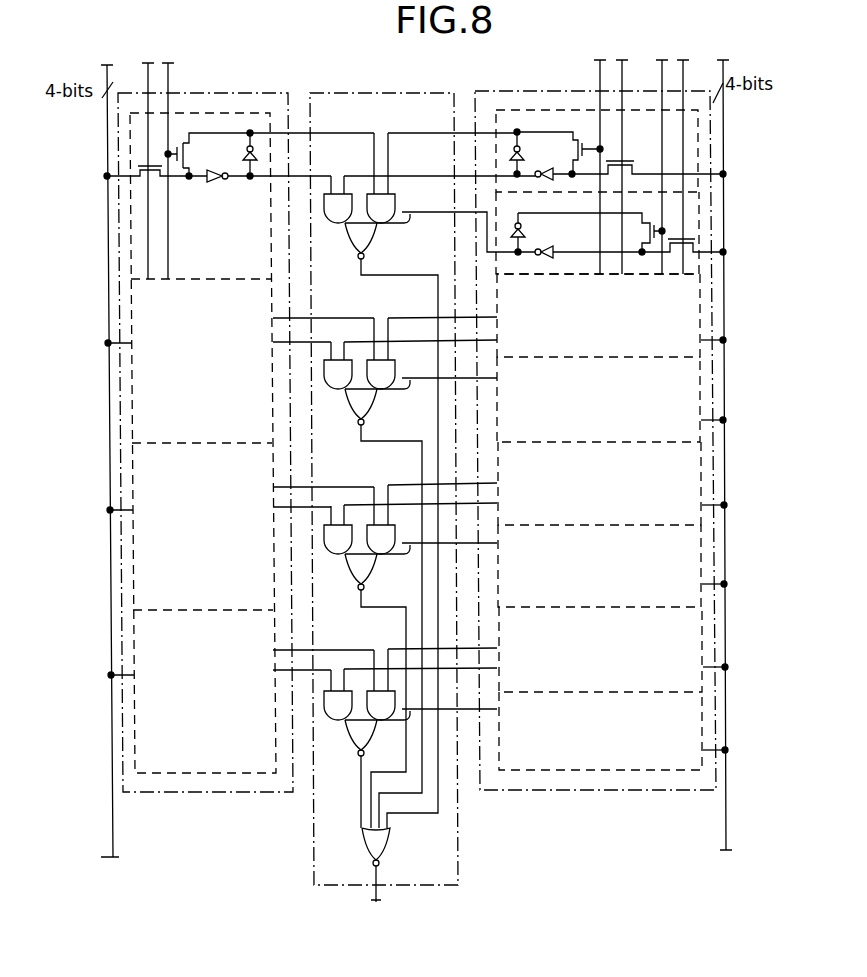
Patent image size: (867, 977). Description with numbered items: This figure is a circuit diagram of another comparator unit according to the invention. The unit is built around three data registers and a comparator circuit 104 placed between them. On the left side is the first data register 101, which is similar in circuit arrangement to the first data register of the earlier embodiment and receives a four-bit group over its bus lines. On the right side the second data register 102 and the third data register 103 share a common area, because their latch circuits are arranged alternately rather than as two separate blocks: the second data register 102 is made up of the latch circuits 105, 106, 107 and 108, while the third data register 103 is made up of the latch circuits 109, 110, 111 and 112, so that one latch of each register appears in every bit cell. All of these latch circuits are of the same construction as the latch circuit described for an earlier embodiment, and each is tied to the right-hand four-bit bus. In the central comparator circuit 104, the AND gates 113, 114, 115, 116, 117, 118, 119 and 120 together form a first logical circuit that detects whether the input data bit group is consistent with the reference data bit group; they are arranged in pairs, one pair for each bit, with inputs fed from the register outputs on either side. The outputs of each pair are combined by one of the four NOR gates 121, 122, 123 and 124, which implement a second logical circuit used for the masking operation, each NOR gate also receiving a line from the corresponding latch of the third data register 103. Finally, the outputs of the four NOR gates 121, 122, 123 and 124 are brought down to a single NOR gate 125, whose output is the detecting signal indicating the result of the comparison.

The first data register 101 is at (243, 93).
The second data register 102 is at (729, 152).
The third data register 103 is at (729, 243).
The comparator circuit 104 is at (397, 93).
The latch circuit 105 is at (552, 110).
The latch circuit 106 is at (688, 348).
The latch circuit 107 is at (688, 515).
The latch circuit 108 is at (683, 678).
The latch circuit 109 is at (702, 218).
The latch circuit 110 is at (688, 430).
The latch circuit 111 is at (684, 592).
The latch circuit 112 is at (683, 758).
The AND gate 113 is at (333, 224).
The AND gate 114 is at (397, 200).
The AND gate 115 is at (342, 392).
The AND gate 116 is at (396, 366).
The AND gate 117 is at (340, 556).
The AND gate 118 is at (400, 522).
The AND gate 119 is at (336, 723).
The AND gate 120 is at (388, 724).
The NOR gate 121 is at (376, 238).
The NOR gate 122 is at (376, 405).
The NOR gate 123 is at (376, 572).
The NOR gate 124 is at (360, 760).
The NOR gate 125 is at (362, 848).